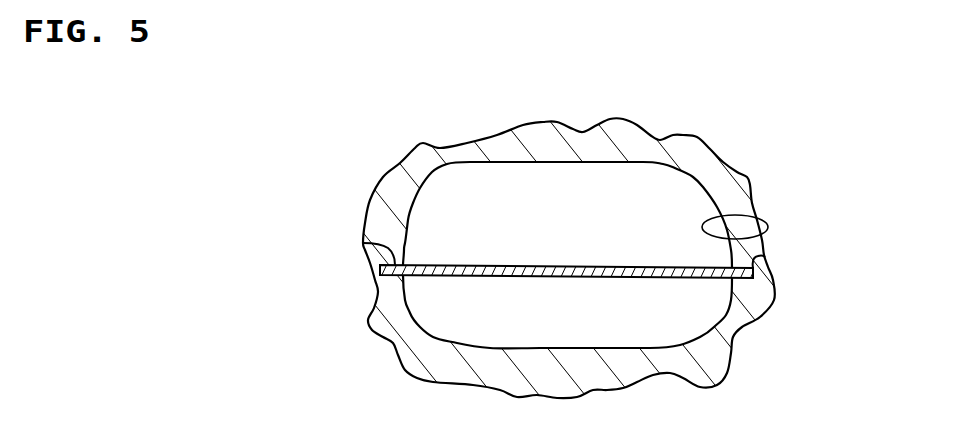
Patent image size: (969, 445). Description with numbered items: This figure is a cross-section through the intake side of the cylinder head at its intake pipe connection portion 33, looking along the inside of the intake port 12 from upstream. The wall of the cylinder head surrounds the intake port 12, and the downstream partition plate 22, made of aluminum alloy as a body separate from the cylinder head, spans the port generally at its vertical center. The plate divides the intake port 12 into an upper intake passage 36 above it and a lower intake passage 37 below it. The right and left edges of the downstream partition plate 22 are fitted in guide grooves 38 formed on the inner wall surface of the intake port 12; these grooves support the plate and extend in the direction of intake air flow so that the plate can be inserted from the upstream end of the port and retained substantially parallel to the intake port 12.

The intake pipe connection portion 33 is at (740, 180).
The intake port 12 is at (768, 221).
The downstream partition plate 22 is at (622, 278).
The upper intake passage 36 is at (569, 228).
The lower intake passage 37 is at (567, 326).
The guide grooves 38 is at (363, 243).